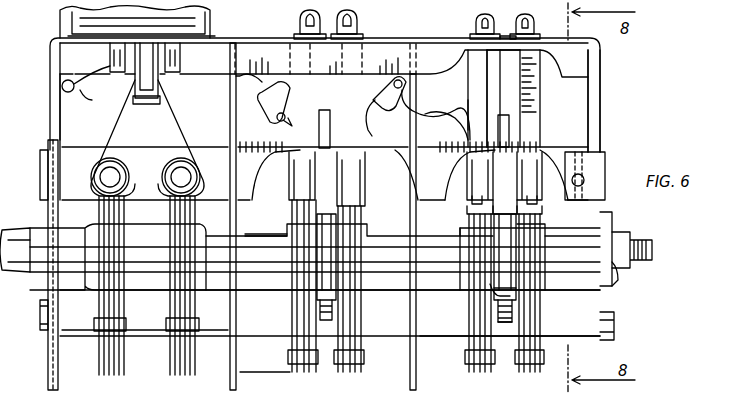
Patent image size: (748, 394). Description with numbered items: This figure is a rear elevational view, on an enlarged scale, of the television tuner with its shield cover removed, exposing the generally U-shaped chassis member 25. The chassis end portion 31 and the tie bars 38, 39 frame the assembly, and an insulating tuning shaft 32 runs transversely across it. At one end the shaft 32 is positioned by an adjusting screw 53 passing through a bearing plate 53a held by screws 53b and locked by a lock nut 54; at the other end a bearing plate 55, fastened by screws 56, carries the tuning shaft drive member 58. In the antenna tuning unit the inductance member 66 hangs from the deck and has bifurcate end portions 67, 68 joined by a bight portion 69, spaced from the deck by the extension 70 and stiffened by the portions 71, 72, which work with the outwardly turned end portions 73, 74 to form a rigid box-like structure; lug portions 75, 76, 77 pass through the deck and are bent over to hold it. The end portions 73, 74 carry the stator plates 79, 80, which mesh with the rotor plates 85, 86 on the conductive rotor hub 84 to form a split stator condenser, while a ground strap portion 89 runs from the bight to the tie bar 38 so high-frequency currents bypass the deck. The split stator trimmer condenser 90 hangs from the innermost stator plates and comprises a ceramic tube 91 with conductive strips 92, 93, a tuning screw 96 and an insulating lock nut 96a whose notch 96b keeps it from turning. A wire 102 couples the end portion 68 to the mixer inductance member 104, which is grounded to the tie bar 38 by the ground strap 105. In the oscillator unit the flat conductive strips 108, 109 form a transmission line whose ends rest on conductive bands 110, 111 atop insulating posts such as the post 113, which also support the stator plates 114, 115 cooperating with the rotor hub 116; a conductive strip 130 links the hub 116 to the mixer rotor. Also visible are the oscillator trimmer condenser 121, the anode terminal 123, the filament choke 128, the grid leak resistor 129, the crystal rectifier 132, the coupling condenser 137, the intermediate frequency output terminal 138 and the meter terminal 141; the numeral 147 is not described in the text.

The chassis member 25 is at (610, 71).
The end portion 31 is at (49, 110).
The tuning shaft 32 is at (394, 252).
The tie bar 38 is at (566, 158).
The tie bar 39 is at (440, 332).
The adjusting screw 53 is at (646, 243).
The bearing plate 53a is at (610, 224).
The screws 53b is at (618, 328).
The lock nut 54 is at (615, 276).
The bearing plate 55 is at (46, 214).
The screws 56 is at (40, 158).
The tuning shaft drive member 58 is at (16, 272).
The inductance member 66 is at (533, 115).
The bifurcate end portion 67 is at (530, 186).
The bifurcate end portion 68 is at (480, 186).
The bight portion 69 is at (505, 97).
The extension 70 is at (512, 74).
The stiffening portion 71 is at (522, 78).
The stiffening portion 72 is at (487, 79).
The outwardly turned end portion 73 is at (530, 198).
The outwardly turned end portion 74 is at (476, 198).
The lug portion 75 is at (541, 36).
The lug portion 76 is at (504, 36).
The lug portion 77 is at (470, 36).
The stator plates 79 is at (540, 212).
The stator plates 80 is at (470, 210).
The rotor hub 84 is at (548, 246).
The rotor plates 85 is at (536, 315).
The rotor plates 86 is at (494, 320).
The ground strap portion 89 is at (503, 128).
The split stator trimmer condenser 90 is at (509, 212).
The ceramic tube 91 is at (494, 280).
The conductive strip 92 is at (520, 226).
The conductive strip 93 is at (472, 231).
The tuning screw 96 is at (496, 320).
The lock nut 96a is at (516, 292).
The notch 96b is at (488, 286).
The wire 102 is at (434, 112).
The inductance member 104 is at (363, 194).
The ground strap 105 is at (325, 120).
The conductive strip 108 is at (186, 126).
The conductive strip 109 is at (104, 128).
The conductive band 110 is at (181, 157).
The conductive band 111 is at (138, 156).
The insulating post 113 is at (124, 170).
The stator plates 114 is at (172, 216).
The stator plates 115 is at (122, 222).
The rotor hub 116 is at (152, 250).
The split stator trimmer condenser 121 is at (141, 102).
The terminal 123 is at (170, 77).
The filament choke 128 is at (102, 76).
The grid leak resistor 129 is at (120, 82).
The conductive strip 130 is at (254, 240).
The crystal rectifier 132 is at (266, 108).
The condenser 137 is at (388, 96).
The intermediate frequency output terminal 138 is at (358, 20).
The terminal 141 is at (299, 20).
The bracket 147 is at (328, 207).